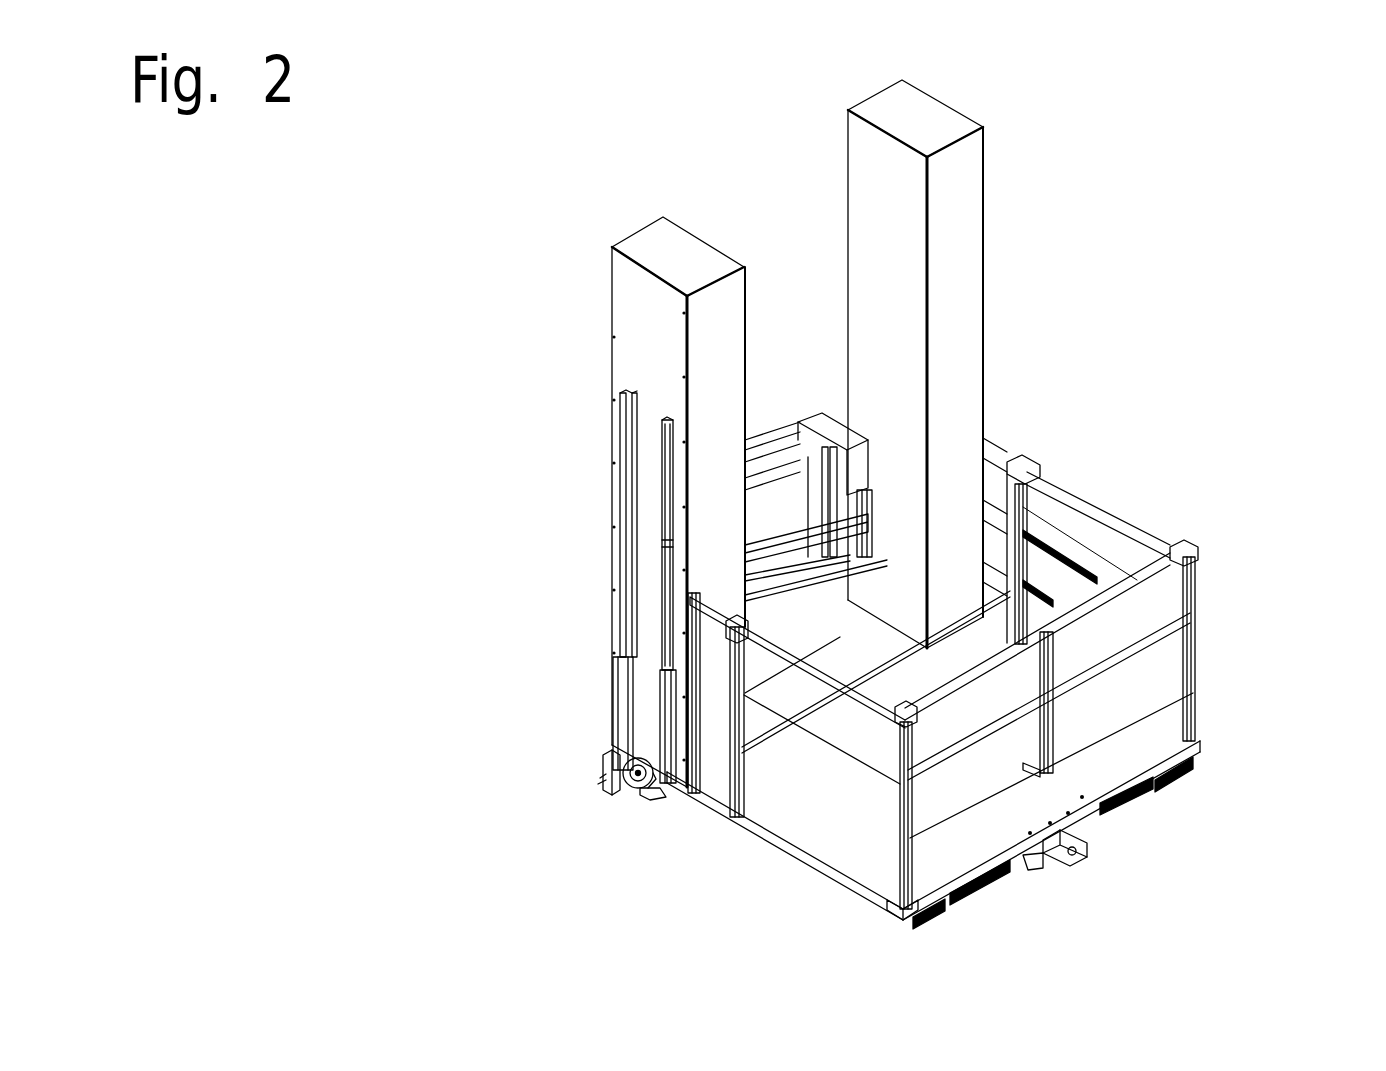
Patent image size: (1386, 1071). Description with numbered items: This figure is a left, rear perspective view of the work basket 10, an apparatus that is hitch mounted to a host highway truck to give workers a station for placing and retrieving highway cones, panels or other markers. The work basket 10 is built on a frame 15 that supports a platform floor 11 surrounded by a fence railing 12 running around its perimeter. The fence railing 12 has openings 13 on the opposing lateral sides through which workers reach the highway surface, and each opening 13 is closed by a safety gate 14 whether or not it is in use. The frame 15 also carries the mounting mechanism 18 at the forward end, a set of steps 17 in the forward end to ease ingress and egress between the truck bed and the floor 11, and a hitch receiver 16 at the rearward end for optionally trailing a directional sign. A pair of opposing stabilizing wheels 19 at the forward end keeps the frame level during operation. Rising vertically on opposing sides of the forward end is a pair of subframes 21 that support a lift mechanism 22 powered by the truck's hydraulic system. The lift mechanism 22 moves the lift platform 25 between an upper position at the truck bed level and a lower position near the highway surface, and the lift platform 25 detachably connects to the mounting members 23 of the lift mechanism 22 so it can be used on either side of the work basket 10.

The work basket 10 is at (1172, 232).
The platform floor 11 is at (838, 847).
The fence railing 12 is at (1140, 598).
The openings 13 is at (820, 926).
The safety gate 14 is at (1160, 537).
The frame 15 is at (1140, 788).
The hitch receiver 16 is at (1072, 862).
The set of steps 17 is at (798, 385).
The mounting mechanism 18 is at (548, 595).
The stabilizing wheels 19 is at (627, 785).
The subframes 21 is at (613, 367).
The lift mechanism 22 is at (622, 678).
The mounting members 23 is at (608, 770).
The lift platform 25 is at (1085, 548).